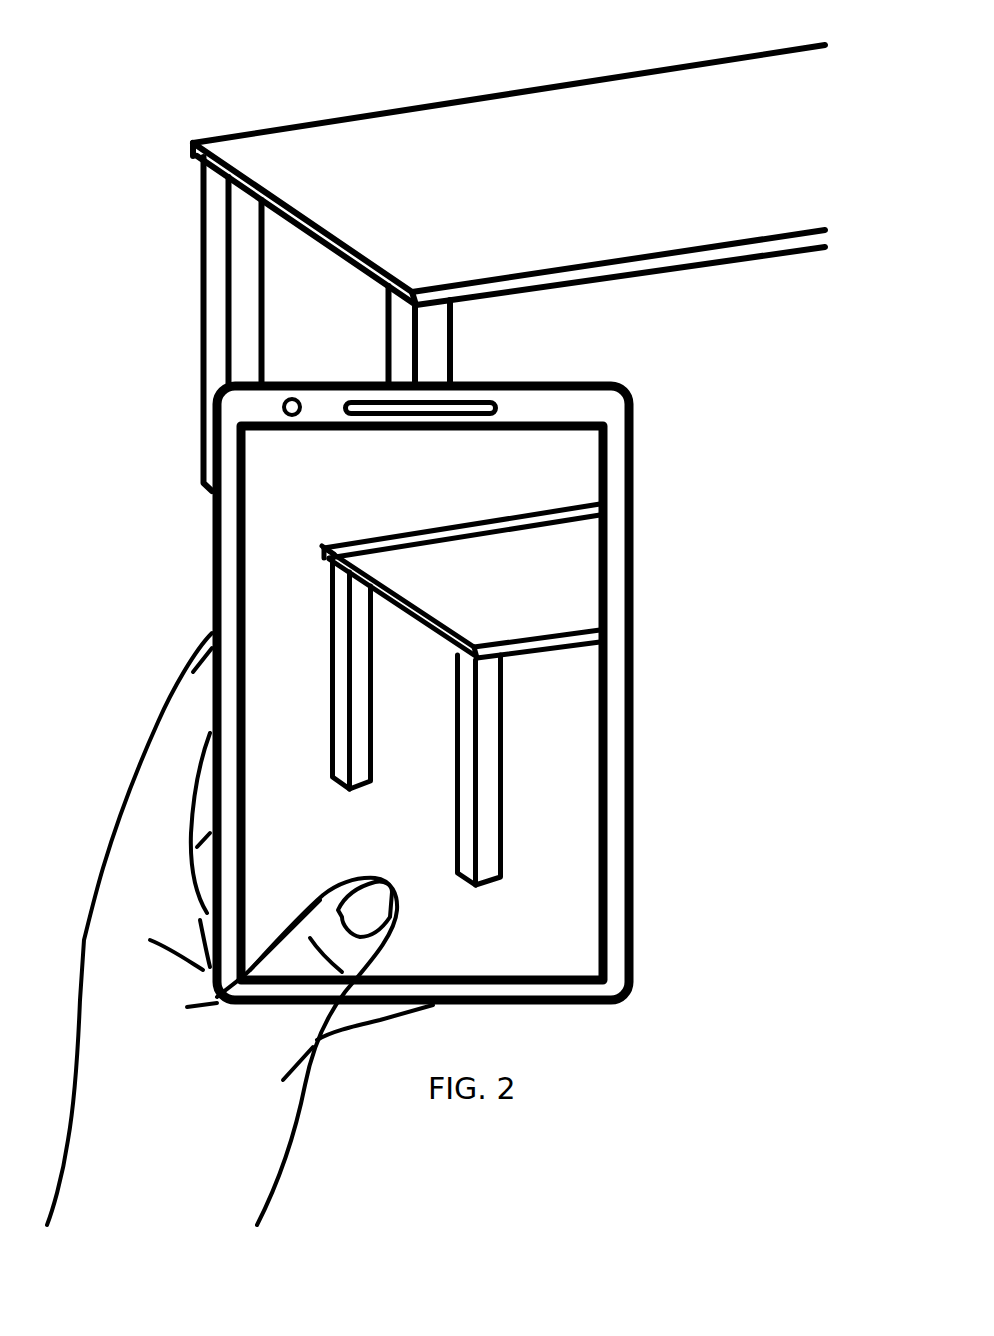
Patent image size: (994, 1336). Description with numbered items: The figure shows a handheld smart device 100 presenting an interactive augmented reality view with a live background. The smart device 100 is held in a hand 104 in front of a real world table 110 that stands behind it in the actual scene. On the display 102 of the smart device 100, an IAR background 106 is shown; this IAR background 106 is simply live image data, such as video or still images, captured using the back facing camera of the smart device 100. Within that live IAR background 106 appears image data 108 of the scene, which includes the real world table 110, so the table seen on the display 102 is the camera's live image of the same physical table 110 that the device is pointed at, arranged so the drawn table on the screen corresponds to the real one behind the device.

The smart device 100 is at (556, 381).
The display 102 is at (608, 556).
The user's hand 104 is at (142, 1041).
The IAR background 106 is at (457, 493).
The image data 108 is at (370, 558).
The real world table 110 is at (480, 203).